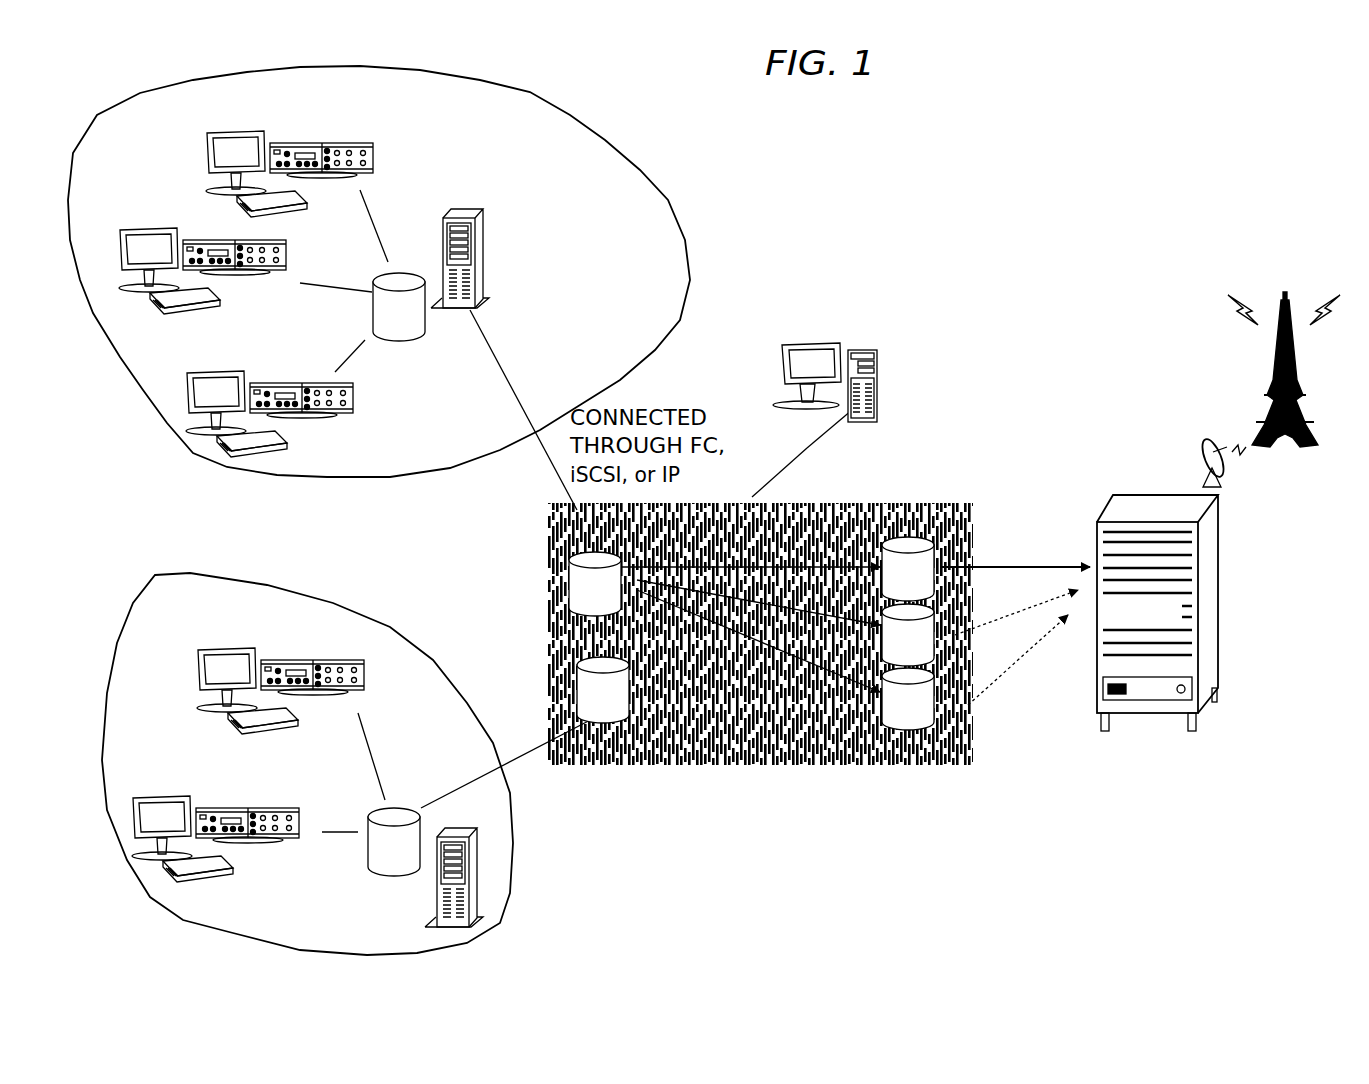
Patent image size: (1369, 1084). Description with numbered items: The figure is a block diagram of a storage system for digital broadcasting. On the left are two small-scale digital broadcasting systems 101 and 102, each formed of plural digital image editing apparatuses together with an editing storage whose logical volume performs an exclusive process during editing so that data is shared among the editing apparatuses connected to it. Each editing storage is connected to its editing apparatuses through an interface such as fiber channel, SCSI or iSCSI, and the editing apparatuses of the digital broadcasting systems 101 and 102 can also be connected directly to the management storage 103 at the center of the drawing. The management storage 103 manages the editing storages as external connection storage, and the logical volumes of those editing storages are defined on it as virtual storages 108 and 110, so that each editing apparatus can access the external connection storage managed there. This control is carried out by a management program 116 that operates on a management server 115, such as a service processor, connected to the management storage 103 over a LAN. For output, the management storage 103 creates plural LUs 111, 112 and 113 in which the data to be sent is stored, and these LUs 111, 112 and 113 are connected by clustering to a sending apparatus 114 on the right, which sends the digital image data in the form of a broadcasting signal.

The digital broadcasting system 101 is at (668, 193).
The digital broadcasting system 102 is at (172, 580).
The management storage 103 is at (999, 639).
The virtual storage 108 is at (598, 560).
The virtual storage 110 is at (603, 715).
The LU 111 is at (923, 542).
The LU 112 is at (918, 616).
The LU 113 is at (912, 717).
The sending apparatus 114 is at (1155, 720).
The management server 115 is at (872, 348).
The management program 116 is at (876, 394).